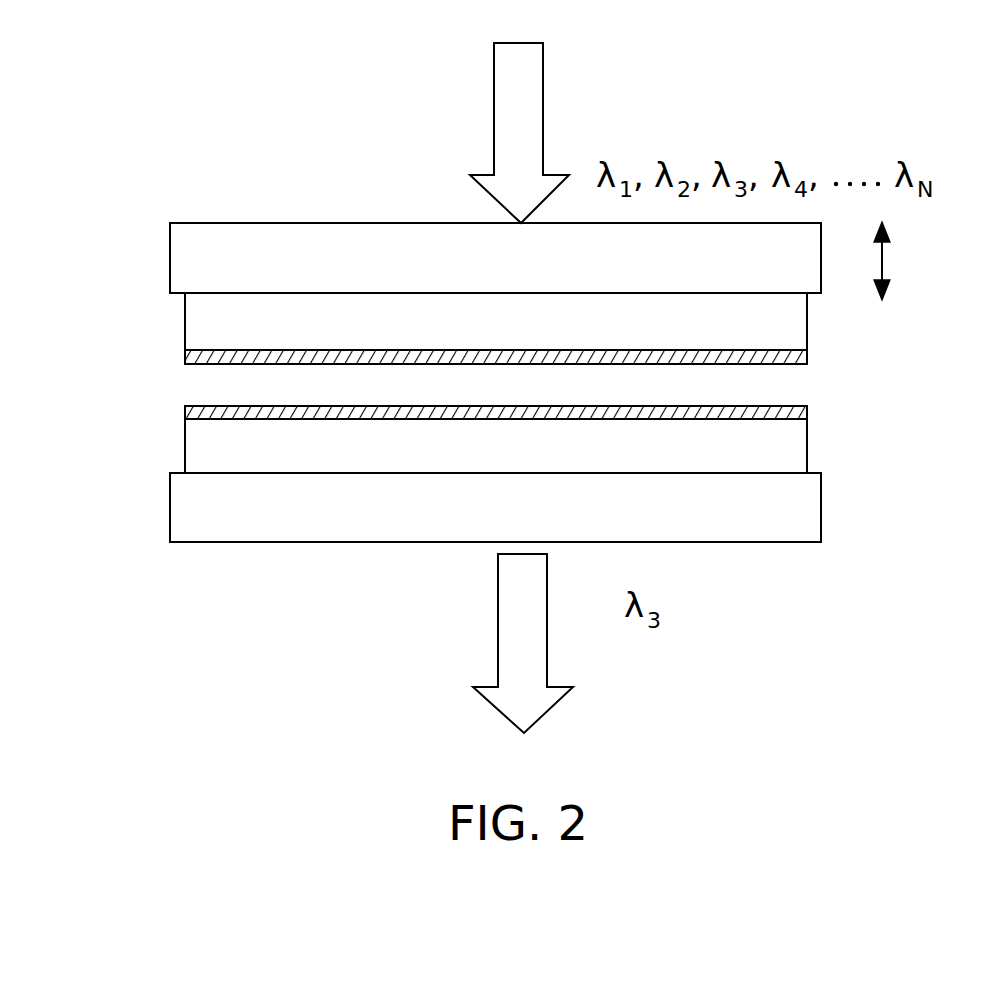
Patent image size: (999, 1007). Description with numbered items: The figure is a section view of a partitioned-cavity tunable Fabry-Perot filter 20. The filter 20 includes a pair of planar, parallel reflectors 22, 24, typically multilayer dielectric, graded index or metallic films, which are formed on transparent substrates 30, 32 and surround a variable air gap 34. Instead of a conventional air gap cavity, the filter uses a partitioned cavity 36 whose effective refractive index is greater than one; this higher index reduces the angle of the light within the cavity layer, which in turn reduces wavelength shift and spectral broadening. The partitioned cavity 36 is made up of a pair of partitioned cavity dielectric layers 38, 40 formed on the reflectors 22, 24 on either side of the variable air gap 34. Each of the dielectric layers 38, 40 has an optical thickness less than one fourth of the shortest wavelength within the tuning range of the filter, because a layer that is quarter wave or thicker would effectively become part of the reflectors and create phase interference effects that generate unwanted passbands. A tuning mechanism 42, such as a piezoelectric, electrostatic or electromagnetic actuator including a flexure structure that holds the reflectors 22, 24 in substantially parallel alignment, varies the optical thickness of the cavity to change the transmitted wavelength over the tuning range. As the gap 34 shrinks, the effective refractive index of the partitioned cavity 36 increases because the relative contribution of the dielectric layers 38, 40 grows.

The tunable Fabry-Perot filter 20 is at (158, 256).
The reflector 22 is at (153, 295).
The reflector 24 is at (153, 418).
The transparent substrate 30 is at (763, 267).
The transparent substrate 32 is at (766, 517).
The variable air gap 34 is at (822, 359).
The partitioned cavity 36 is at (153, 350).
The partitioned cavity dielectric layer 38 is at (337, 350).
The partitioned cavity dielectric layer 40 is at (322, 419).
The tuning mechanism 42 is at (884, 262).